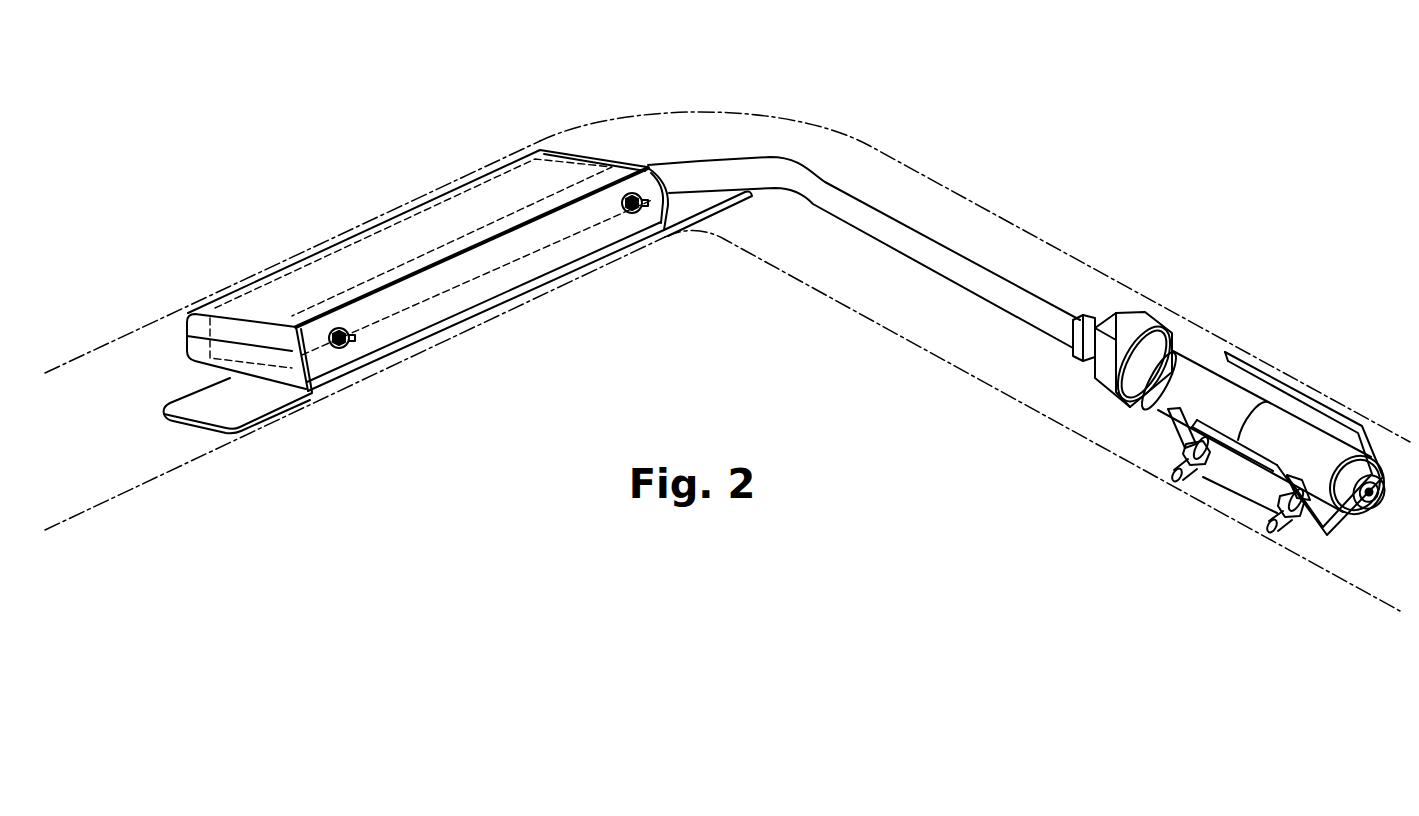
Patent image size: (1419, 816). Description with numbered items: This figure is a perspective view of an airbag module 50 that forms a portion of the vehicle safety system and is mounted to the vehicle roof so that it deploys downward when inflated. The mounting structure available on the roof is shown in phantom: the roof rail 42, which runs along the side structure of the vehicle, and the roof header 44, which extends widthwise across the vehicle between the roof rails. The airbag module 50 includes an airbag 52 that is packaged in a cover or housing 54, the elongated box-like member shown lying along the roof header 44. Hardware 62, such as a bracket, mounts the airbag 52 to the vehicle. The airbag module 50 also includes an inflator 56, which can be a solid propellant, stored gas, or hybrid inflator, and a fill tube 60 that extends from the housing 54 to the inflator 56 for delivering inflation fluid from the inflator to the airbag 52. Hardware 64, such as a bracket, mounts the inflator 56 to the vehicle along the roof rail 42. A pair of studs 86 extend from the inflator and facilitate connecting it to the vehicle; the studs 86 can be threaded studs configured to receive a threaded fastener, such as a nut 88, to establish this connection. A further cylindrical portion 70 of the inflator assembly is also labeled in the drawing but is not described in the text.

The roof rail 42 is at (1010, 234).
The roof header 44 is at (103, 380).
The airbag module 50 is at (936, 88).
The airbag 52 is at (353, 248).
The cover or housing 54 is at (446, 222).
The inflator 56 is at (1312, 436).
The fill tube 60 is at (831, 190).
The hardware 62 is at (445, 287).
The hardware 64 is at (1243, 473).
The sensor body 70 is at (1200, 382).
The studs 86 is at (1180, 478).
The nut 88 is at (1196, 450).